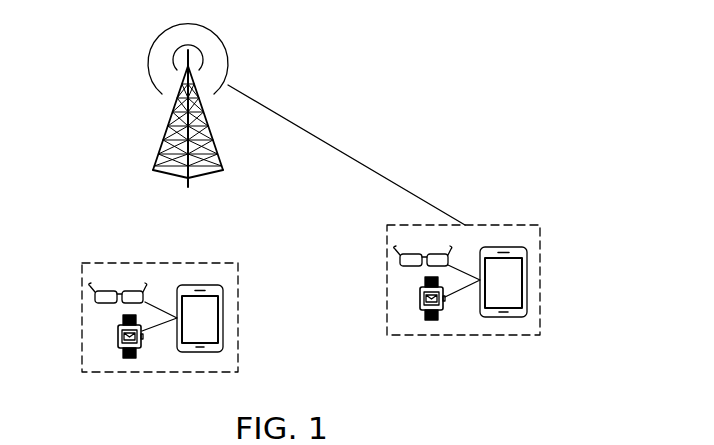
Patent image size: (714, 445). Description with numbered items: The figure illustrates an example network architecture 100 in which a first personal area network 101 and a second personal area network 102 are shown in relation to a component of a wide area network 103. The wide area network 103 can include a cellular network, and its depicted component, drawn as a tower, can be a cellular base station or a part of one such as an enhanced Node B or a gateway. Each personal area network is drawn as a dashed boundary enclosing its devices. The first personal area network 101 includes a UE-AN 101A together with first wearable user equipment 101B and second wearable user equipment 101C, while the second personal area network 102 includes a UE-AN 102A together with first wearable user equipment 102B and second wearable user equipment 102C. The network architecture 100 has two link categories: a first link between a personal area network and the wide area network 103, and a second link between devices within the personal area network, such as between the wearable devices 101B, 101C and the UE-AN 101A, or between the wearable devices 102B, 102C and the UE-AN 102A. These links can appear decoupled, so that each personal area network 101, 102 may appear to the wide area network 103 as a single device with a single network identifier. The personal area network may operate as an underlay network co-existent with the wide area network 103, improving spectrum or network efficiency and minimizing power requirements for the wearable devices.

The network architecture 100 is at (438, 66).
The wide area network 103 is at (208, 139).
The first personal area network 101 is at (540, 233).
The UE-AN 101A is at (527, 286).
The first wearable user equipment 101B is at (398, 255).
The second wearable user equipment 101C is at (420, 299).
The second personal area network 102 is at (238, 271).
The UE-AN 102A is at (223, 323).
The first wearable user equipment 102B is at (93, 296).
The second wearable user equipment 102C is at (118, 338).